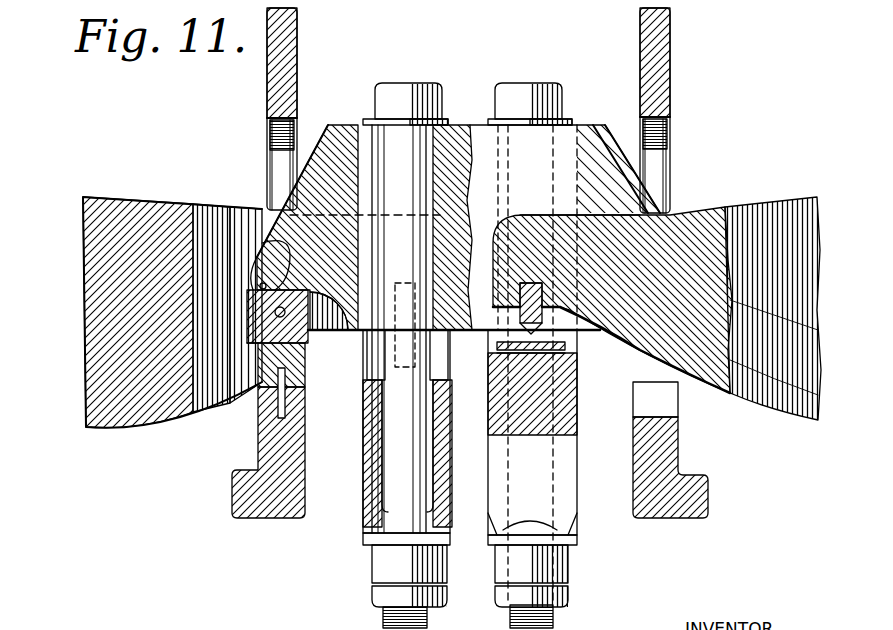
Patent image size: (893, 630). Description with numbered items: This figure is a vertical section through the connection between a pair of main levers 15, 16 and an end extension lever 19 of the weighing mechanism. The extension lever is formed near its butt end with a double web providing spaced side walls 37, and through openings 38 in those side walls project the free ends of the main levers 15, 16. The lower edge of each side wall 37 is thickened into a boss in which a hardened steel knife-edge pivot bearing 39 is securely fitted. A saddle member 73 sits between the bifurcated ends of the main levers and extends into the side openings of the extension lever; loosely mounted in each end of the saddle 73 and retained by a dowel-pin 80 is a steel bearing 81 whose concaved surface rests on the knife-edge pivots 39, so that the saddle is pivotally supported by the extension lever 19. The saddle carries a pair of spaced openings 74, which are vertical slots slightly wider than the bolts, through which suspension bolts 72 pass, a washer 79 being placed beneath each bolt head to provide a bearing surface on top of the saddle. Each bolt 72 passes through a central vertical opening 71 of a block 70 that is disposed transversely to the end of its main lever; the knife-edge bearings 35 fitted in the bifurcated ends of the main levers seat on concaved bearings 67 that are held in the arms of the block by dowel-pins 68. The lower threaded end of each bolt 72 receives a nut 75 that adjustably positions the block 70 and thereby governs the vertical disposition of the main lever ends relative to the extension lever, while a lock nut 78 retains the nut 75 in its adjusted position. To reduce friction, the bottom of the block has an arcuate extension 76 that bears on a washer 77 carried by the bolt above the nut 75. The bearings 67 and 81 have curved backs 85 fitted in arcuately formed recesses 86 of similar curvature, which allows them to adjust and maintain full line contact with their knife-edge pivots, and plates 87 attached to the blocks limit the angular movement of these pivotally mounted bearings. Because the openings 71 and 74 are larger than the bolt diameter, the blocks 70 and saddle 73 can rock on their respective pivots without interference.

The main lever 15 is at (122, 180).
The main lever 16 is at (753, 212).
The end extension lever 19 is at (234, 496).
The knife-edge bearing 35 is at (540, 330).
The side wall 37 is at (272, 88).
The opening 38 is at (278, 145).
The knife-edge pivot bearing 39 is at (300, 378).
The concaved bearing 67 is at (420, 348).
The dowel-pin 68 is at (520, 352).
The block 70 is at (372, 482).
The central vertical opening 71 is at (380, 438).
The suspension bolt 72 is at (508, 102).
The saddle member 73 is at (458, 227).
The opening 74 is at (348, 130).
The nut 75 is at (383, 565).
The arcuate extension 76 is at (568, 522).
The washer 77 is at (368, 536).
The lock nut 78 is at (376, 596).
The washer 79 is at (367, 120).
The dowel-pin 80 is at (258, 300).
The steel bearing 81 is at (312, 332).
The curved back 85 is at (266, 266).
The arcuately formed recess 86 is at (268, 232).
The plate 87 is at (250, 338).